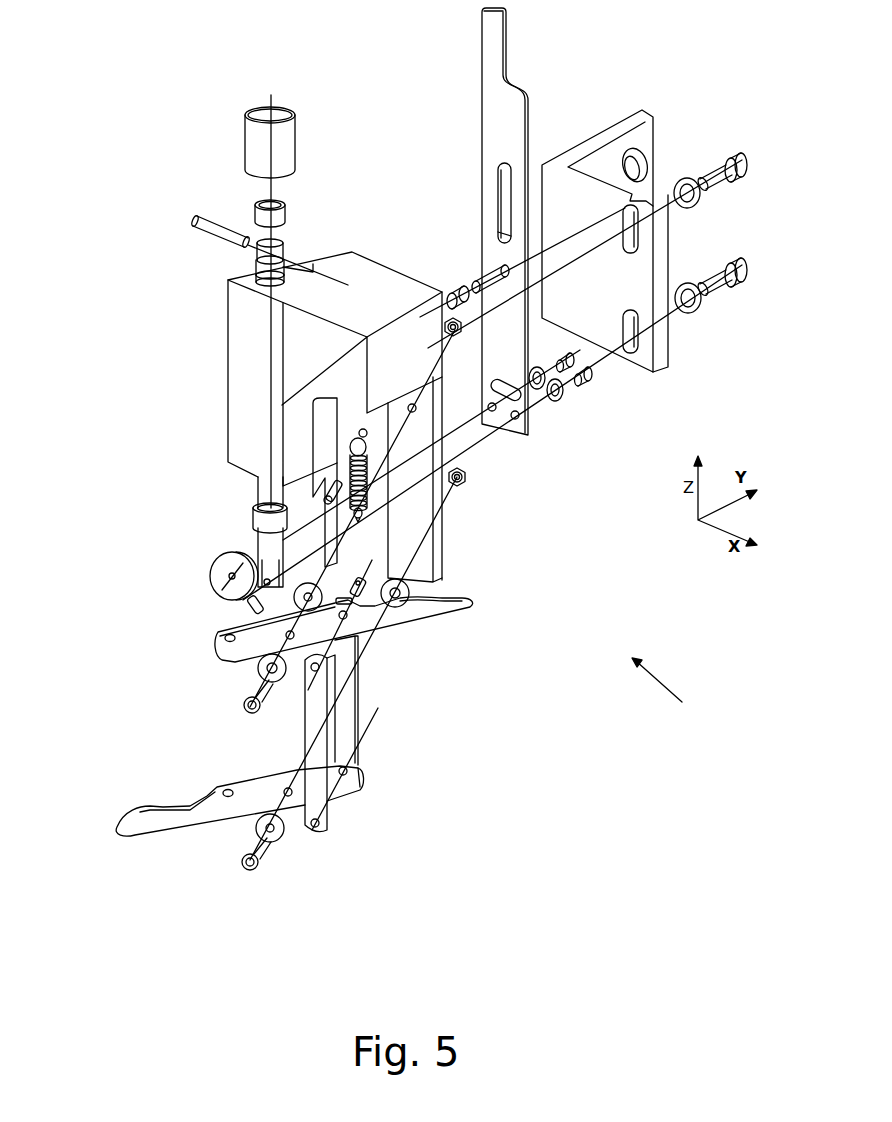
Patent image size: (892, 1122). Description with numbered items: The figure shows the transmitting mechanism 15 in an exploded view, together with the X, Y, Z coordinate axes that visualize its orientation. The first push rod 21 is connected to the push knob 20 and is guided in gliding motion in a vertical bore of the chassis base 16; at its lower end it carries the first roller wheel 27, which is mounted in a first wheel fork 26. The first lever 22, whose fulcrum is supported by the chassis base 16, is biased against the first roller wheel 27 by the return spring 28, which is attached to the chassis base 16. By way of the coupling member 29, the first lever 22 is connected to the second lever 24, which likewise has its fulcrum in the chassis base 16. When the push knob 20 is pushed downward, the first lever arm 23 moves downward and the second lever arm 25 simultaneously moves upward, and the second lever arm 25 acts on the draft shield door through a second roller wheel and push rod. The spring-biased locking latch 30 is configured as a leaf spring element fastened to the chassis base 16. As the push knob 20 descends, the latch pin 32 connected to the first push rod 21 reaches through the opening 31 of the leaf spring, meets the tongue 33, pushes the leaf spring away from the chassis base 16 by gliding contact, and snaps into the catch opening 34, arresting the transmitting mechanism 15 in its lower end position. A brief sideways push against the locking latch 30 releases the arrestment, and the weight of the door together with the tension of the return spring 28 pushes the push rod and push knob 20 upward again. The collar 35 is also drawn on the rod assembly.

The transmitting mechanism 15 is at (668, 693).
The chassis base 16 is at (247, 402).
The push knob 20 is at (262, 150).
The first push rod 21 is at (265, 493).
The first lever 22 is at (352, 790).
The first lever arm 23 is at (160, 823).
The second lever 24 is at (238, 648).
The second lever arm 25 is at (440, 615).
The first wheel fork 26 is at (265, 542).
The first roller wheel 27 is at (212, 582).
The return spring 28 is at (463, 486).
The coupling member 29 is at (320, 752).
The spring-biased locking latch 30 is at (493, 85).
The opening 31 is at (505, 187).
The latch pin 32 is at (485, 277).
The tongue 33 is at (493, 230).
The catch opening 34 is at (543, 316).
The collar 35 is at (252, 512).